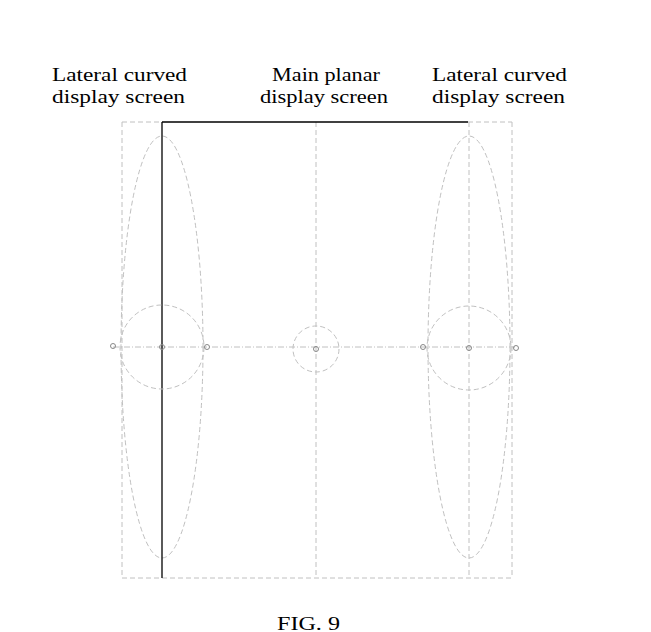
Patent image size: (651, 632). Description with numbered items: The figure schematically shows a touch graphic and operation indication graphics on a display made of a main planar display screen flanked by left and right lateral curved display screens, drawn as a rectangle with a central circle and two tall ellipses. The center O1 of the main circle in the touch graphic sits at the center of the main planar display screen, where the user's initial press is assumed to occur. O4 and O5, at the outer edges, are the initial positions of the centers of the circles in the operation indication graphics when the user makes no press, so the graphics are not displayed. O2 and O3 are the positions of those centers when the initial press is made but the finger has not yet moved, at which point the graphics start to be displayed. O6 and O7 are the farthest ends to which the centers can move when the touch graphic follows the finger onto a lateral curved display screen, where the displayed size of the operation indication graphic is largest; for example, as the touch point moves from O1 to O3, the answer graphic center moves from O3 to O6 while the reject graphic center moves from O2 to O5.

The center of main circle in touch graphic O1 is at (309, 338).
The initial-press position of reject graphic circle center O2 is at (162, 347).
The initial-press position of answer graphic circle center O3 is at (469, 348).
The initial position of answer graphic circle center O4 is at (531, 359).
The initial position of reject graphic circle center O5 is at (103, 359).
The farthest end of answer graphic circle center O6 is at (413, 360).
The farthest end of reject graphic circle center O7 is at (223, 364).